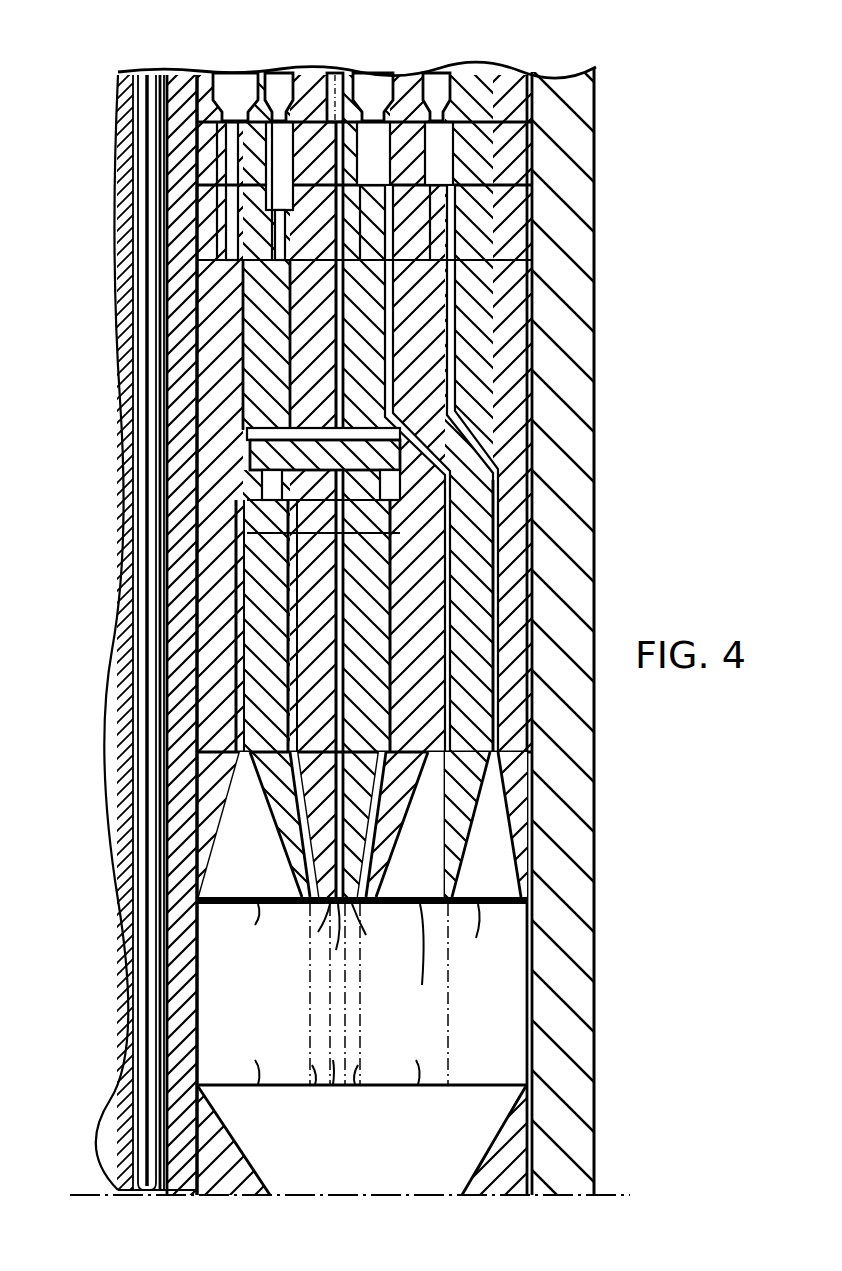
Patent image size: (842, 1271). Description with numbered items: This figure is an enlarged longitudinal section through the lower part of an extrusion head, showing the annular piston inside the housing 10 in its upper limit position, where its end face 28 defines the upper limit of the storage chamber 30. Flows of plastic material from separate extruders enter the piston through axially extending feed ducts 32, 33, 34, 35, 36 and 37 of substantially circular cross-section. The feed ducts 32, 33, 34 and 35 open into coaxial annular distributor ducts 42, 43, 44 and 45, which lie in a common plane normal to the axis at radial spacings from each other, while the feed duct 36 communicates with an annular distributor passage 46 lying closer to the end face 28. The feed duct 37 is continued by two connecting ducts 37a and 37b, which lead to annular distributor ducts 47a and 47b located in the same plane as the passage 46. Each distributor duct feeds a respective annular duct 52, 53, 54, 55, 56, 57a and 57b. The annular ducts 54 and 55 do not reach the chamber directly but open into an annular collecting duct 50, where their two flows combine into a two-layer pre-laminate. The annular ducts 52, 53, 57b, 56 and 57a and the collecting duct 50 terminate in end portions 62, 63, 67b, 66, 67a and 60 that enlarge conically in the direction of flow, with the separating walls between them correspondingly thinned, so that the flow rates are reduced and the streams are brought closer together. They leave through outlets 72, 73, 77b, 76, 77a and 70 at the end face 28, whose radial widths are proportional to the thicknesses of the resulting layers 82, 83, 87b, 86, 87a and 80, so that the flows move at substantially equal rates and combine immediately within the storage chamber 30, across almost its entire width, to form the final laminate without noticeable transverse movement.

The housing 10 is at (560, 372).
The end face 28 is at (505, 905).
The storage chamber 30 is at (515, 993).
The feed duct 32 is at (437, 120).
The feed duct 33 is at (368, 128).
The feed duct 34 is at (195, 132).
The feed duct 35 is at (195, 166).
The feed duct 36 is at (470, 332).
The feed duct 37 is at (395, 285).
The connecting duct 37a is at (462, 402).
The connecting duct 37b is at (268, 432).
The annular distributor duct 42 is at (445, 238).
The annular distributor duct 43 is at (455, 215).
The annular distributor duct 44 is at (225, 250).
The annular distributor duct 45 is at (222, 220).
The annular distributor passage 46 is at (300, 562).
The annular distributor duct 47a is at (285, 522).
The annular distributor duct 47b is at (395, 502).
The annular collecting duct 50 is at (262, 470).
The annular duct 52 is at (502, 692).
The annular duct 53 is at (455, 652).
The annular duct 54 is at (265, 366).
The annular duct 55 is at (243, 332).
The annular duct 56 is at (240, 702).
The annular duct 57a is at (335, 675).
The annular duct 57b is at (450, 600).
The end portion 60 is at (182, 866).
The end portion 62 is at (492, 882).
The end portion 63 is at (415, 870).
The end portion 66 is at (162, 916).
The end portion 67a is at (218, 878).
The end portion 67b is at (425, 832).
The outlet 70 is at (240, 926).
The outlet 72 is at (476, 942).
The outlet 73 is at (412, 962).
The outlet 76 is at (332, 960).
The outlet 77a is at (318, 940).
The outlet 77b is at (366, 940).
The layer 80 is at (257, 1088).
The layer 82 is at (518, 1090).
The layer 83 is at (419, 1088).
The layer 86 is at (334, 1088).
The layer 87a is at (314, 1088).
The layer 87b is at (356, 1088).